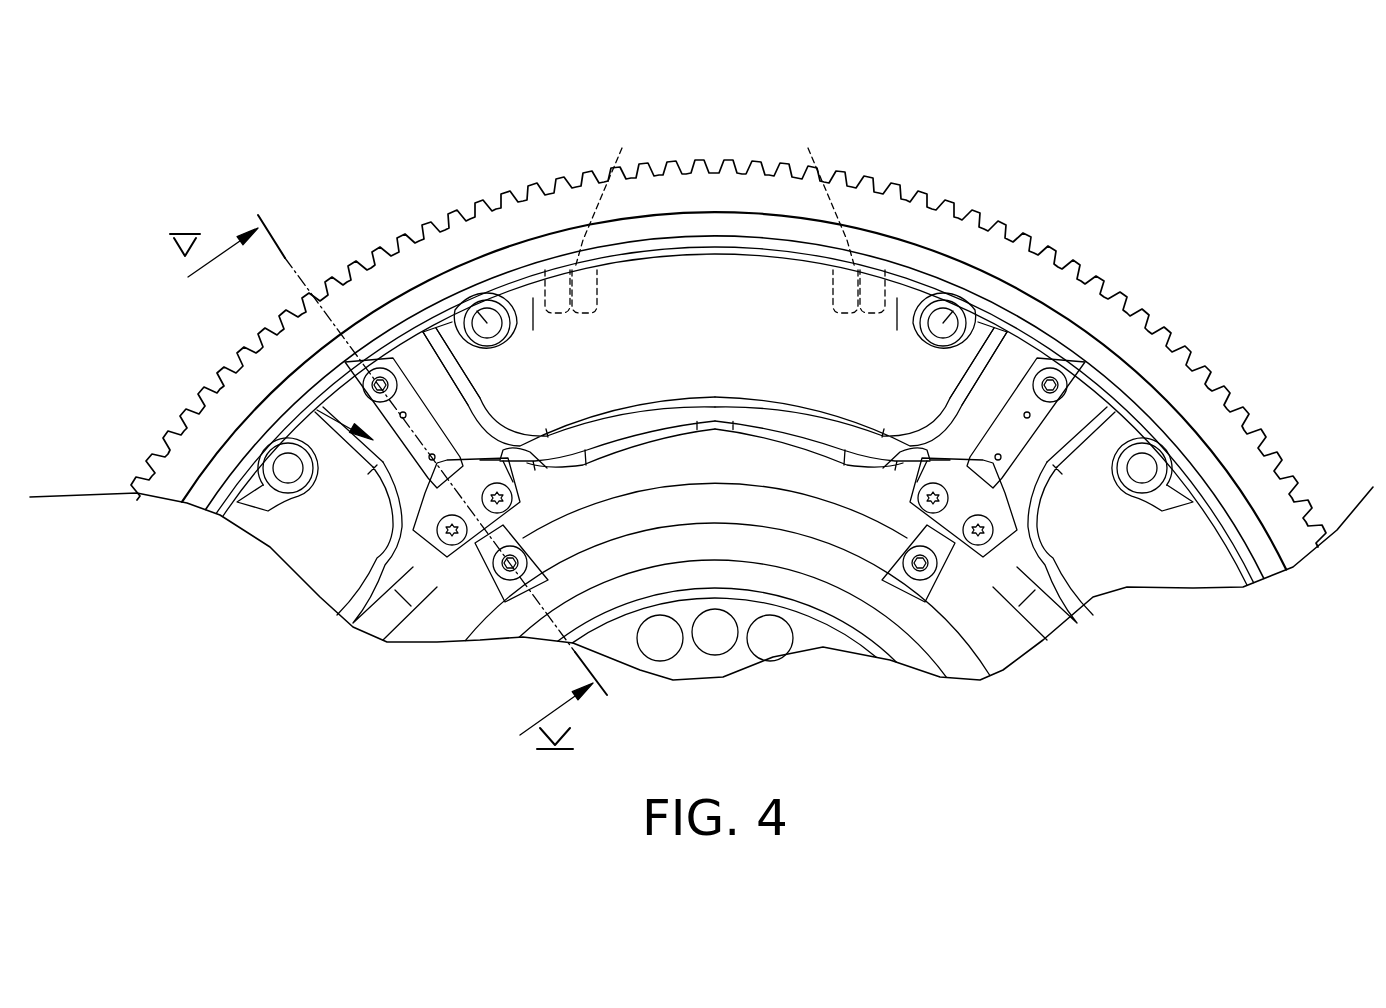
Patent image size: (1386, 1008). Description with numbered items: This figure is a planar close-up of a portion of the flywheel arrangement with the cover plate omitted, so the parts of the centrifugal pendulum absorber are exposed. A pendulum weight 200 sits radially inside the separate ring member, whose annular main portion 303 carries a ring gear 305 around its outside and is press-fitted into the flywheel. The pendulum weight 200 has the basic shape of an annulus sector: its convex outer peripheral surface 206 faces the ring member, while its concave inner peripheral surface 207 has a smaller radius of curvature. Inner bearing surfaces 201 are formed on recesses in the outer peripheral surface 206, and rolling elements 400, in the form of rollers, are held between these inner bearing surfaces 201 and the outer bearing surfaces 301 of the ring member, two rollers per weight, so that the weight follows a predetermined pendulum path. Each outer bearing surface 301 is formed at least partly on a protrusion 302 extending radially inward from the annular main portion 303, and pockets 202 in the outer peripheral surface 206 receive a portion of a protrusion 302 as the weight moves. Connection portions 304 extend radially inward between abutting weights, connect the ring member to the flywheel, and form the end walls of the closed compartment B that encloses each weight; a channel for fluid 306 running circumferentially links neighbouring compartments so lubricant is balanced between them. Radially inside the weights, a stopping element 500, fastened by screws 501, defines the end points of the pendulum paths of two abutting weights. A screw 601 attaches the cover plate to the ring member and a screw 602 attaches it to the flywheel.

The pendulum weight 200 is at (767, 253).
The inner bearing surface 201 is at (462, 308).
The pocket 202 is at (620, 160).
The outer peripheral surface 206 is at (705, 347).
The inner peripheral surface 207 is at (713, 407).
The bearing surface 301 is at (500, 310).
The protrusion 302 is at (525, 293).
The annular main portion 303 is at (680, 230).
The connection portion 304 is at (317, 410).
The ring gear 305 is at (1067, 357).
The channel for fluid 306 is at (363, 357).
The rolling element 400 is at (487, 323).
The stopping element 500 is at (407, 548).
The screw 501 is at (452, 546).
The screw 601 is at (378, 380).
The screw 602 is at (508, 580).
The closed compartment B is at (383, 422).